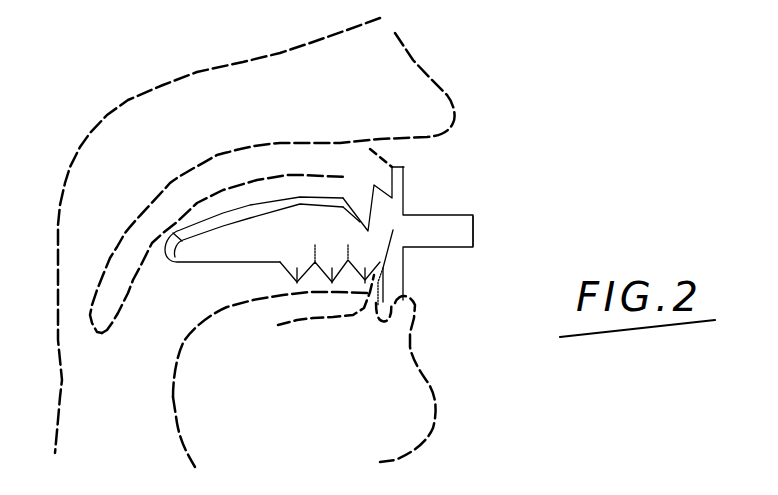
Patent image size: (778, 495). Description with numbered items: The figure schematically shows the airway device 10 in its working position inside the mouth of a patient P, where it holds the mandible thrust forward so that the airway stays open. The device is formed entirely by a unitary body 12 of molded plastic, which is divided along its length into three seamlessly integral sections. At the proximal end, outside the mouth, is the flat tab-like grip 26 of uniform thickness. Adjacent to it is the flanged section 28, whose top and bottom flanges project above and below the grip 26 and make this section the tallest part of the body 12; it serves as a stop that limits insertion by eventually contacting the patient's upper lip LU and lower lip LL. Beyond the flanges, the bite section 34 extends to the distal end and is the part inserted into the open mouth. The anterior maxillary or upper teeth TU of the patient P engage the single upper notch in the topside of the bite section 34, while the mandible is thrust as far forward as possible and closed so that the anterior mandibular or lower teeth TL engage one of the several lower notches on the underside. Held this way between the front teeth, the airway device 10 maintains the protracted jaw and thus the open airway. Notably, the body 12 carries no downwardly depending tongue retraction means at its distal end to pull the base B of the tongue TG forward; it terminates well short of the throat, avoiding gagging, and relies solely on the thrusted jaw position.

The airway device 10 is at (351, 209).
The unitary body 12 is at (444, 212).
The grip 26 is at (471, 240).
The flanged section 28 is at (395, 268).
The bite section 34 is at (255, 221).
The patient P is at (445, 75).
The upper teeth TU is at (352, 198).
The upper lip LU is at (383, 182).
The lower lip LL is at (407, 308).
The lower teeth TL is at (366, 310).
The tongue TG is at (266, 318).
The base of the tongue B is at (200, 449).